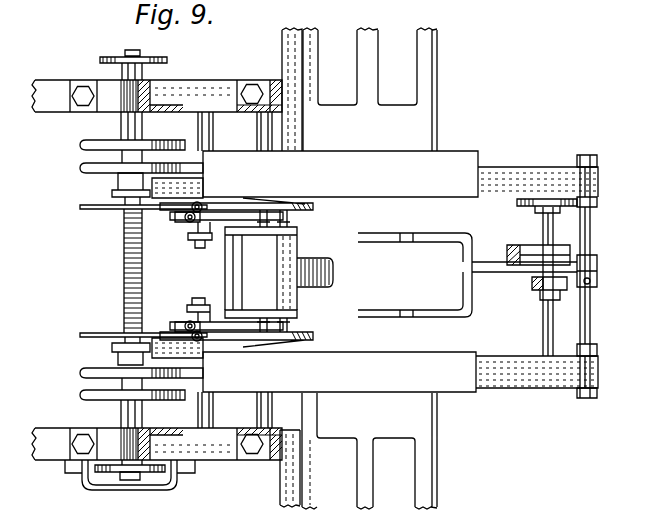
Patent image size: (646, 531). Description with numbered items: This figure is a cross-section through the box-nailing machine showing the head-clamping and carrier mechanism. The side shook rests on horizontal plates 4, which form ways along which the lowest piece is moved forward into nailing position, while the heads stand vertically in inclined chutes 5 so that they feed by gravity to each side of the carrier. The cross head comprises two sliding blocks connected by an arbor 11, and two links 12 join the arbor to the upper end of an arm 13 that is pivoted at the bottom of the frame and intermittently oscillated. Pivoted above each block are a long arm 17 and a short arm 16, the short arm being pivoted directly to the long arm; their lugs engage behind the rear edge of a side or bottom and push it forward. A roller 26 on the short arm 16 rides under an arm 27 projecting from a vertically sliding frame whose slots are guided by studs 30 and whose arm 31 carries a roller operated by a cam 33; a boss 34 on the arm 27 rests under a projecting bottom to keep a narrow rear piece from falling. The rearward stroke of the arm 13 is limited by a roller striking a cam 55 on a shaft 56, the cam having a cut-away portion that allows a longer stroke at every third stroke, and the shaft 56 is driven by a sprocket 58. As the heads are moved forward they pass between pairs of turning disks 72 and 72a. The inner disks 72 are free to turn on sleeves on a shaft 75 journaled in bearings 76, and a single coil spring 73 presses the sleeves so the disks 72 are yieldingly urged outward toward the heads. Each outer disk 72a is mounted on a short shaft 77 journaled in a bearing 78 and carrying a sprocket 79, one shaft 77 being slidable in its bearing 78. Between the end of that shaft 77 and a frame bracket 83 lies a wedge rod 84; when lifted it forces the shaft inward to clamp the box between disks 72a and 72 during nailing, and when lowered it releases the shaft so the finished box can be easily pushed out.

The horizontal plates 4 is at (459, 170).
The inclined chutes 5 is at (358, 268).
The arbor 11 is at (232, 269).
The links 12 is at (248, 315).
The arm 13 is at (316, 260).
The short arm 16 is at (205, 244).
The long arm 17 is at (306, 207).
The roller 26 is at (188, 308).
The arm 27 is at (467, 275).
The studs 30 is at (590, 340).
The arm 31 is at (534, 284).
The cam 33 is at (597, 286).
The boss 34 is at (407, 237).
The cam 55 is at (573, 251).
The shaft 56 is at (545, 323).
The sprocket 58 is at (574, 205).
The innermost turning disks 72 is at (84, 168).
The outer turning disks 72a is at (84, 146).
The coil spring 73 is at (141, 271).
The shaft 75 is at (143, 249).
The bearings 76 is at (118, 186).
The short shaft 77 is at (152, 93).
The bearing 78 is at (128, 125).
The sprocket 79 is at (124, 57).
The frame bracket 83 is at (160, 488).
The wedge rod 84 is at (131, 480).